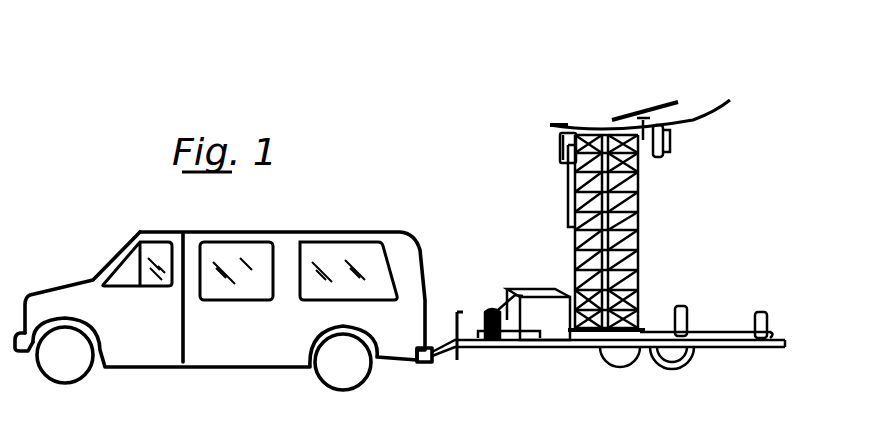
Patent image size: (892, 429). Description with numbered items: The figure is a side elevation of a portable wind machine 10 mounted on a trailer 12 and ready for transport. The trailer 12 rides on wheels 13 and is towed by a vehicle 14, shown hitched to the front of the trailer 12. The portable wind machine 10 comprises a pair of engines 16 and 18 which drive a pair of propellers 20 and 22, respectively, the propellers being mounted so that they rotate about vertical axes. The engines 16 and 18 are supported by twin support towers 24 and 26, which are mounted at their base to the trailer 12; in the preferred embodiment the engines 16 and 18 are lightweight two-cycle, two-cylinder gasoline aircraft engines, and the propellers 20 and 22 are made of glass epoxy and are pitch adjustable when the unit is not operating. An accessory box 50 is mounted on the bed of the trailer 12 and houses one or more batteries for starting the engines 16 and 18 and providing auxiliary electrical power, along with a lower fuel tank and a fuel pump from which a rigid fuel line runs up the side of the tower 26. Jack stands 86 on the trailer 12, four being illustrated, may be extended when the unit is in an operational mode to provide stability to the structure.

The portable wind machine 10 is at (703, 243).
The trailer 12 is at (705, 350).
The wheels 13 is at (622, 350).
The vehicle 14 is at (310, 232).
The engine 16 is at (665, 127).
The engine 18 is at (558, 142).
The propeller 20 is at (667, 102).
The propeller 22 is at (563, 125).
The support tower 24 is at (647, 193).
The support tower 26 is at (577, 257).
The accessory box 50 is at (557, 327).
The jack stands 86 is at (530, 293).